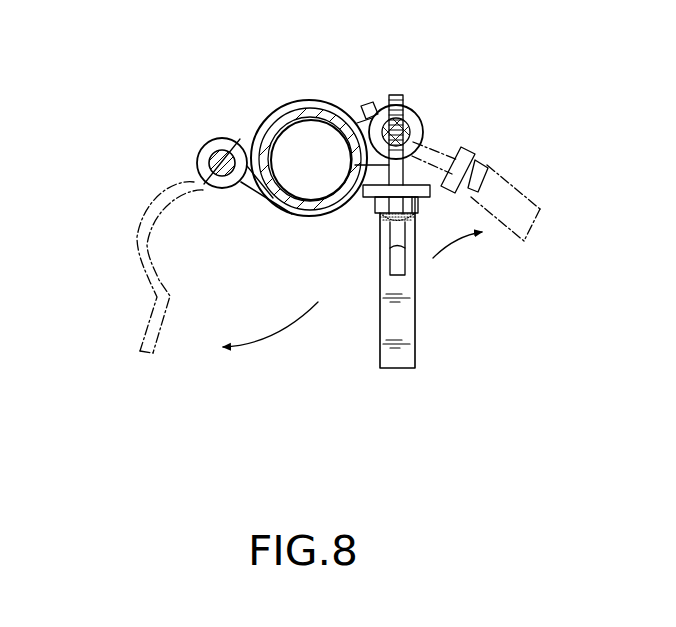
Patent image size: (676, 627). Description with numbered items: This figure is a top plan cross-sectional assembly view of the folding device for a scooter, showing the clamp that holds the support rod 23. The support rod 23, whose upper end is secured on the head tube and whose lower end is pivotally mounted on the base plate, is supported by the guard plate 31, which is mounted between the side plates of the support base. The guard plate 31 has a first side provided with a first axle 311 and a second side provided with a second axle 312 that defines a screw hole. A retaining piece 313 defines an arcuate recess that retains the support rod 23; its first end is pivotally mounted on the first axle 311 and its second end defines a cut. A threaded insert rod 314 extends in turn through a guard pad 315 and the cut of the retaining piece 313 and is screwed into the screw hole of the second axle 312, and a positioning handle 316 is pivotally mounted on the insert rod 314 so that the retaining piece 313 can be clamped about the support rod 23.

The guard plate 31 is at (280, 108).
The support rod 23 is at (308, 117).
The first axle 311 is at (215, 157).
The second axle 312 is at (421, 118).
The retaining piece 313 is at (137, 223).
The threaded insert rod 314 is at (388, 98).
The guard pad 315 is at (370, 215).
The positioning handle 316 is at (523, 188).